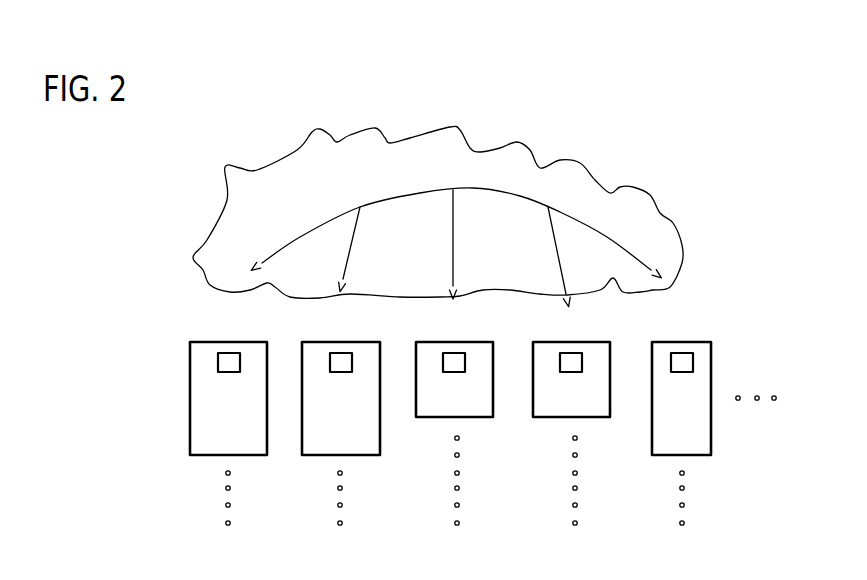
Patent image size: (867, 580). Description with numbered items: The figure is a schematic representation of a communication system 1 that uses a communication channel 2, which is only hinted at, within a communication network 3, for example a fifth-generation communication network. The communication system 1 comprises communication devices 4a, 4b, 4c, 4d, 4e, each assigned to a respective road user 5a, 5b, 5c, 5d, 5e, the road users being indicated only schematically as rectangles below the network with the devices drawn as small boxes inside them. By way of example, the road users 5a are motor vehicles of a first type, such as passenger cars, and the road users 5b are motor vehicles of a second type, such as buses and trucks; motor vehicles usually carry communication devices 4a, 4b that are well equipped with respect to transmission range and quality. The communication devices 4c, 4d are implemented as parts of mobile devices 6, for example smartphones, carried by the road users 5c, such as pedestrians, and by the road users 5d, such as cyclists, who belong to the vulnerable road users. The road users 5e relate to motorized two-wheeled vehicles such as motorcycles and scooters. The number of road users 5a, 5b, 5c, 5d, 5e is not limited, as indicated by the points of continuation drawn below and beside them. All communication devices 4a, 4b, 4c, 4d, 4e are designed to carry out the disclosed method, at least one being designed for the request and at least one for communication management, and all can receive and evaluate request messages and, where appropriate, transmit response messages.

The communication system 1 is at (611, 156).
The communication channel 2 is at (502, 190).
The communication network 3 is at (640, 215).
The communication device 4a is at (217, 362).
The communication device 4b is at (332, 356).
The communication device 4c is at (466, 361).
The communication device 4d is at (583, 361).
The communication device 4e is at (694, 360).
The road user 5a is at (190, 437).
The road user 5b is at (281, 480).
The road user 5c is at (410, 458).
The road user 5d is at (535, 458).
The road user 5e is at (711, 437).
The mobile device 6 is at (416, 365).